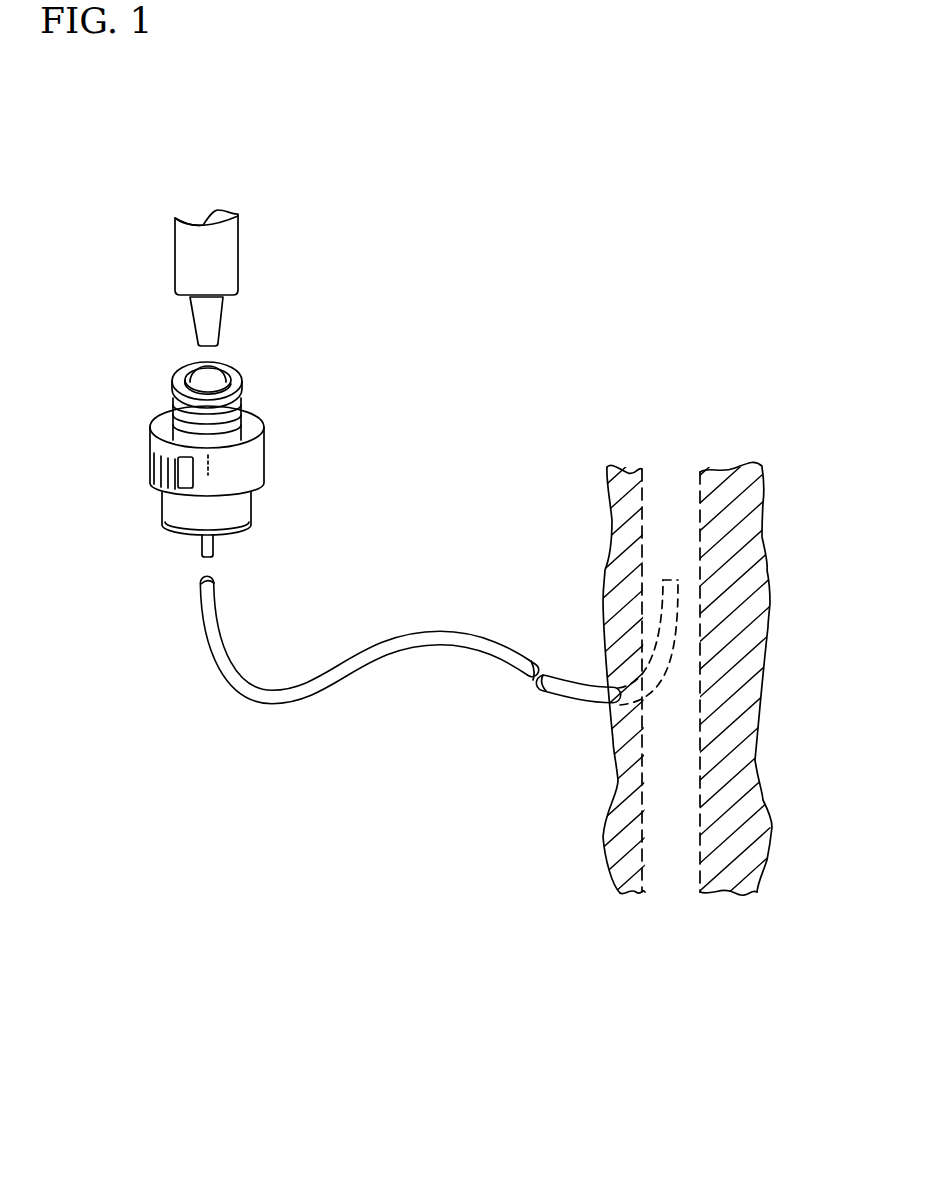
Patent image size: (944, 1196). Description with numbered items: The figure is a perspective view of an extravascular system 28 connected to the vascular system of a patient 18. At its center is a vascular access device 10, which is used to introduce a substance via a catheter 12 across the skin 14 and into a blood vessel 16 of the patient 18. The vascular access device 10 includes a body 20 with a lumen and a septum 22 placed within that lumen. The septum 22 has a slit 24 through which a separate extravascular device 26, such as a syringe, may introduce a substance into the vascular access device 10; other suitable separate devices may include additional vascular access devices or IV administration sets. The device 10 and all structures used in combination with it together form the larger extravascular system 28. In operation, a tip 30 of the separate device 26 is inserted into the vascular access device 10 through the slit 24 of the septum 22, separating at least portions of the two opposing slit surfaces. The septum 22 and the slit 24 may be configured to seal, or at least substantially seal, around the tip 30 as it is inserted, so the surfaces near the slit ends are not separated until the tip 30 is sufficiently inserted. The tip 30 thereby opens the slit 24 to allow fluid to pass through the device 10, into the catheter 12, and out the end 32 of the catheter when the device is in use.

The vascular access device 10 is at (224, 440).
The catheter 12 is at (301, 697).
The skin 14 is at (620, 873).
The blood vessel 16 is at (675, 493).
The patient 18 is at (727, 858).
The body 20 is at (245, 465).
The septum 22 is at (175, 380).
The slit 24 is at (208, 383).
The separate extravascular device 26 is at (232, 243).
The extravascular system 28 is at (367, 695).
The tip 30 is at (203, 317).
The end 32 is at (667, 584).